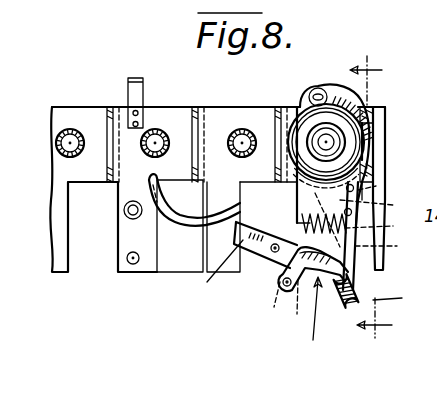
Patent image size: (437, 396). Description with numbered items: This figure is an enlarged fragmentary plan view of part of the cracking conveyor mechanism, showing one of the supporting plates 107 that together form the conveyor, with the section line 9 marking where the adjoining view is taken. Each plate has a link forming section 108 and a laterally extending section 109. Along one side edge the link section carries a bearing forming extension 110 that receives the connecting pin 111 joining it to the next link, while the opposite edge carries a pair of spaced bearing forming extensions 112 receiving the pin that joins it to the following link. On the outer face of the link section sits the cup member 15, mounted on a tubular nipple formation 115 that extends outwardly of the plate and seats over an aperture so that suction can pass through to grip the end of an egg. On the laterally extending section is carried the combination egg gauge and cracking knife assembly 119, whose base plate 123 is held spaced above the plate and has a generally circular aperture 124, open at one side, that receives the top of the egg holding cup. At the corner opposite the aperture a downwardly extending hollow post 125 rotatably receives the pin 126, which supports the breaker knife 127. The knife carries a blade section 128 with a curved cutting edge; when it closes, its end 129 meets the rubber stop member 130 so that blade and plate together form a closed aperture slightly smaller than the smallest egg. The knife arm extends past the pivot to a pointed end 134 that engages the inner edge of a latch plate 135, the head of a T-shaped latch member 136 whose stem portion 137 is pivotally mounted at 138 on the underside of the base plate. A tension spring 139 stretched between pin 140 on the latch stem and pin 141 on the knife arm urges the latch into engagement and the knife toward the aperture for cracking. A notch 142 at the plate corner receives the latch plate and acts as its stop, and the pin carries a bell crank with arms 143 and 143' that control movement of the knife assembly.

The section line 9- 9 is at (371, 197).
The cup member 15 is at (365, 133).
The supporting plate 107 is at (67, 108).
The link forming section 108 is at (230, 107).
The laterally extending section 109 is at (122, 231).
The bearing forming extension 110 is at (193, 128).
The connecting pin 111 is at (204, 107).
The spaced bearing forming extensions 112 is at (290, 107).
The tubular nipple formation 115 is at (58, 133).
The combination egg gauge and cutter or cracking knife assembly 119 is at (320, 287).
The base plate 123 is at (382, 197).
The aperture or recess 124 is at (362, 110).
The hollow post 125 is at (291, 307).
The pin 126 is at (263, 304).
The breaker knife 127 is at (217, 275).
The blade section 128 is at (180, 223).
The end of blade 129 is at (180, 226).
The rubber stop member 130 is at (321, 88).
The pointed end of knife arm 134 is at (332, 284).
The latch plate 135 is at (354, 281).
The T-shaped latch member 136 is at (370, 220).
The stem portion 137 is at (375, 173).
The pivot 138 is at (365, 167).
The tension spring 139 is at (392, 246).
The pin 140 is at (378, 187).
The pin 141 is at (265, 257).
The notch 142 is at (381, 262).
The bell crank arm 143 is at (404, 299).
The bell crank arm 143' is at (285, 278).